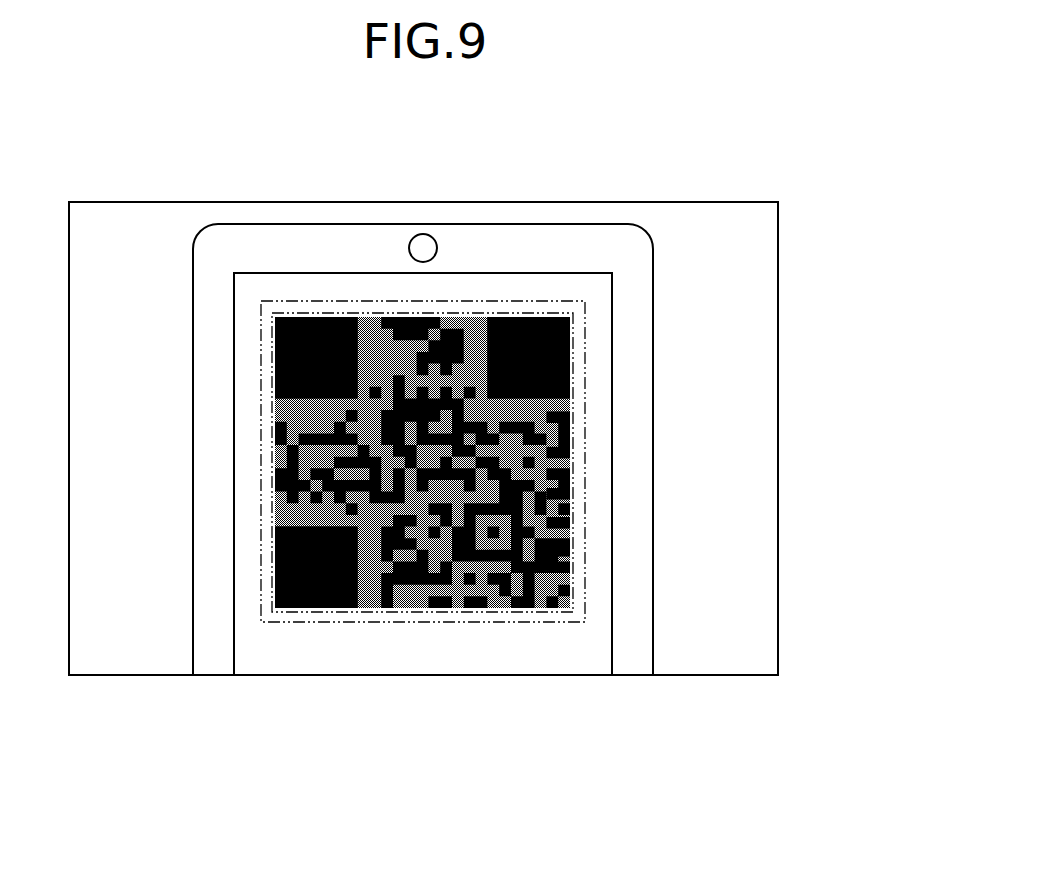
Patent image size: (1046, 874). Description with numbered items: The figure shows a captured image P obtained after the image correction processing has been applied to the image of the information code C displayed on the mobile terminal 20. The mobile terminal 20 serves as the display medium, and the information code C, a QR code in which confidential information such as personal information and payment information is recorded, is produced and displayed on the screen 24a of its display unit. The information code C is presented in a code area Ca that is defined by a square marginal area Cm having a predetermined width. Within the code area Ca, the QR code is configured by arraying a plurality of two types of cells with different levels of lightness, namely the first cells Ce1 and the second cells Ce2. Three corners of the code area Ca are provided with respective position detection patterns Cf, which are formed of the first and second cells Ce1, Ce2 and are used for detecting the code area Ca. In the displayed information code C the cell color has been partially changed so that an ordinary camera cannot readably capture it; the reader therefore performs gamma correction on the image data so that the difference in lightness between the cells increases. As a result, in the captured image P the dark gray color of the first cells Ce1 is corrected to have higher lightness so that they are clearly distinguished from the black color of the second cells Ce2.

The captured image P is at (728, 202).
The mobile terminal 20 is at (584, 224).
The screen 24a is at (465, 273).
The information code C is at (515, 628).
The marginal area Cm is at (437, 624).
The code area Ca is at (377, 612).
The position detection pattern Cf is at (307, 318).
The first cell Ce1 is at (568, 493).
The second cell Ce2 is at (568, 382).